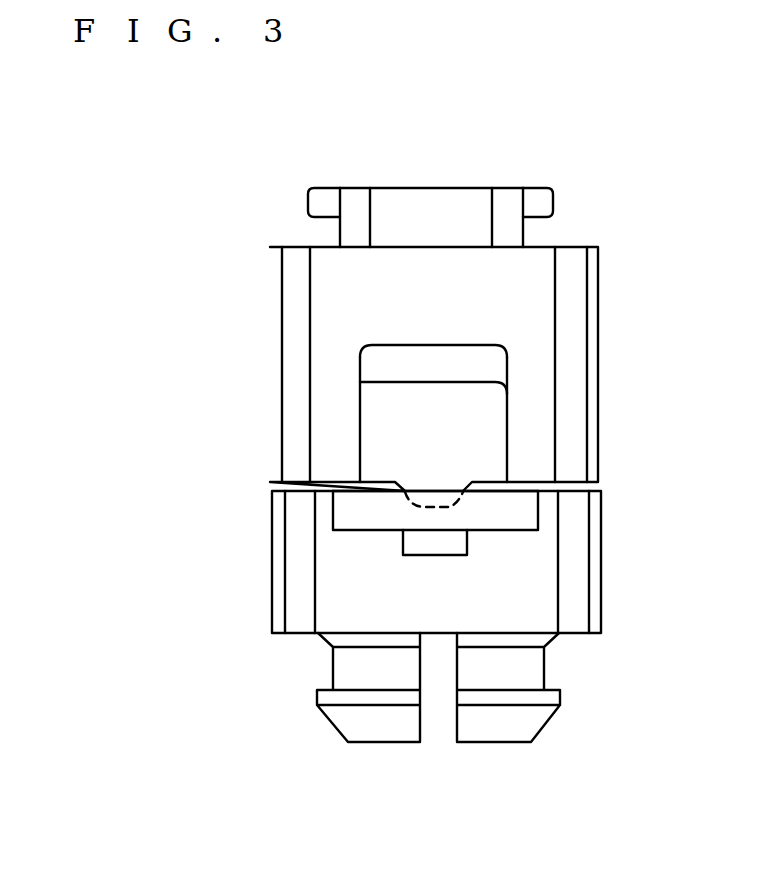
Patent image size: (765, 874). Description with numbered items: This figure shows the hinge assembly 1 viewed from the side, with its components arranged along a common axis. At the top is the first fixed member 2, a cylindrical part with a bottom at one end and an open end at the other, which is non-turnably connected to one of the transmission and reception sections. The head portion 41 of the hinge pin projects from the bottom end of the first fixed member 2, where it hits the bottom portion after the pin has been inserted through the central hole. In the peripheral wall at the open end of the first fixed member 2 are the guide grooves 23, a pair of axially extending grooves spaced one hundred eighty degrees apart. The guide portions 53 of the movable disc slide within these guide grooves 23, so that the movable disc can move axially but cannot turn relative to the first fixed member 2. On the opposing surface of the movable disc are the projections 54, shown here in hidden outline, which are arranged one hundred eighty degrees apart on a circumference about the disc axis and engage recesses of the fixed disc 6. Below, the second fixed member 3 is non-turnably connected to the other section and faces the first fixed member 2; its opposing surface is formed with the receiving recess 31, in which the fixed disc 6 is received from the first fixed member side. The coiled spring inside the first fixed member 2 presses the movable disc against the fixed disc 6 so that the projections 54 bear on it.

The hinge assembly 1 is at (645, 178).
The first fixed member 2 is at (598, 307).
The second fixed member 3 is at (272, 575).
The head portion 41 is at (540, 183).
The guide grooves 23 is at (468, 345).
The guide portions 53 is at (475, 430).
The projections 54 is at (447, 507).
The receiving recess 31 is at (356, 531).
The fixed disc 6 is at (513, 515).